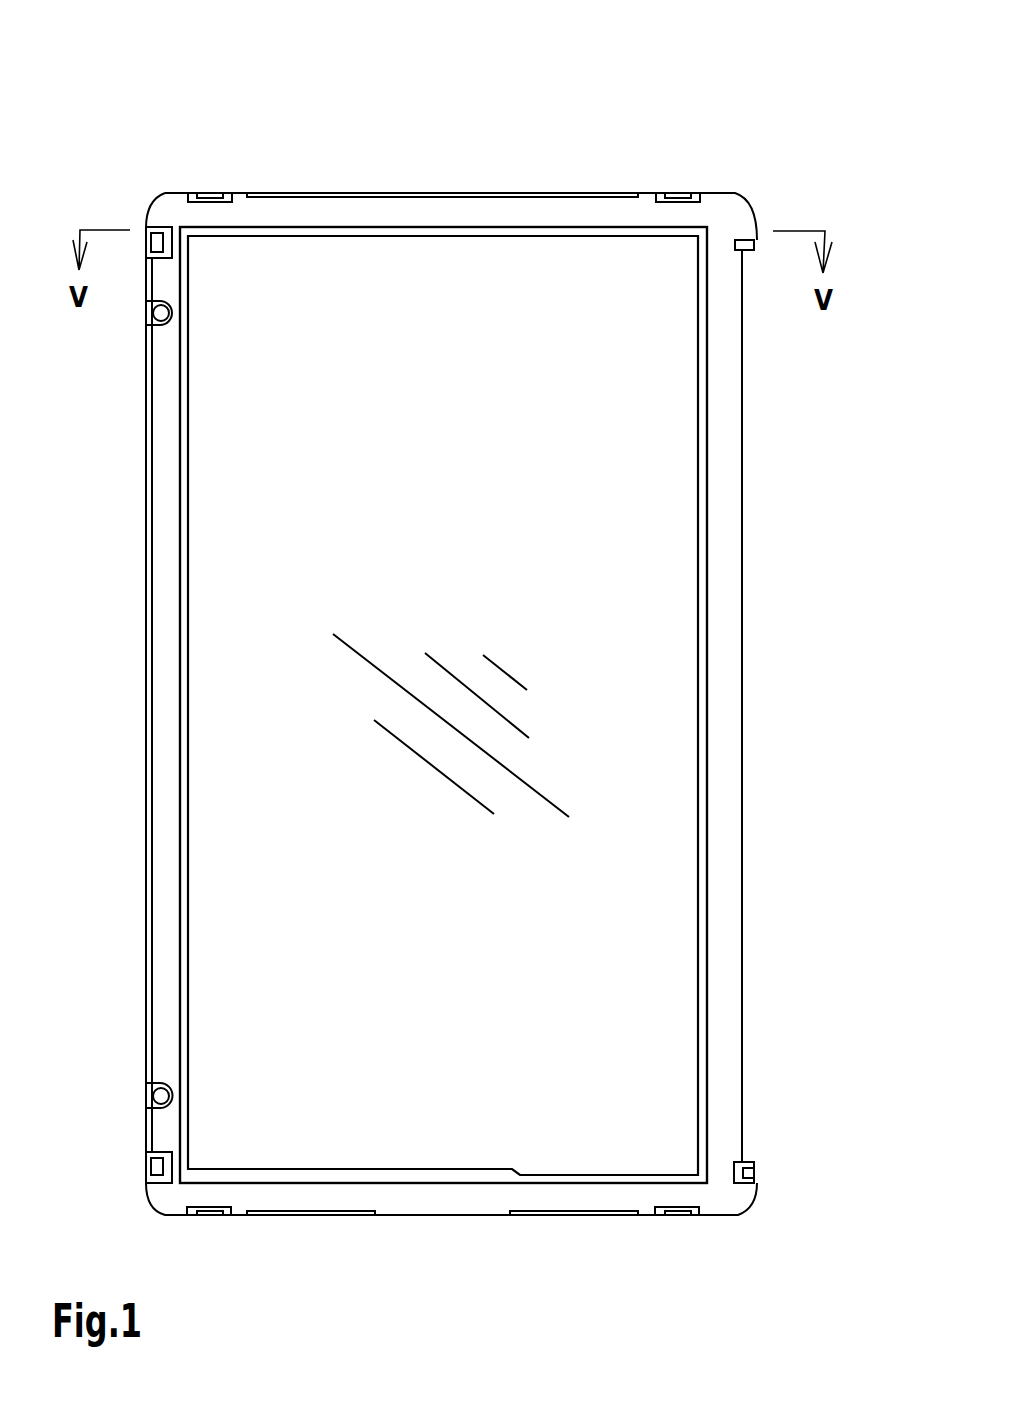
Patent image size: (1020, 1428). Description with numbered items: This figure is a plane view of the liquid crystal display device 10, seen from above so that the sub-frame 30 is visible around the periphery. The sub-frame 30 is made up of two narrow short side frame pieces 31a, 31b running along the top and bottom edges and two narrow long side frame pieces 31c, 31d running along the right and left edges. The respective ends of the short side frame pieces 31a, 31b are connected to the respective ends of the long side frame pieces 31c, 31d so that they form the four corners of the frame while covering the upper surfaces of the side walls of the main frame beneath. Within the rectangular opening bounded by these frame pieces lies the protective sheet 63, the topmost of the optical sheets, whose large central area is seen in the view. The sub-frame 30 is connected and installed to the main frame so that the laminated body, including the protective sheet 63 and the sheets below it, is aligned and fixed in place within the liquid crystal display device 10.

The liquid crystal display device 10 is at (606, 108).
The sub-frame 30 is at (162, 392).
The short side frame piece 31a is at (392, 210).
The short side frame piece 31b is at (475, 1200).
The long side frame piece 31c is at (730, 697).
The long side frame piece 31d is at (158, 683).
The protective sheet 63 is at (630, 882).